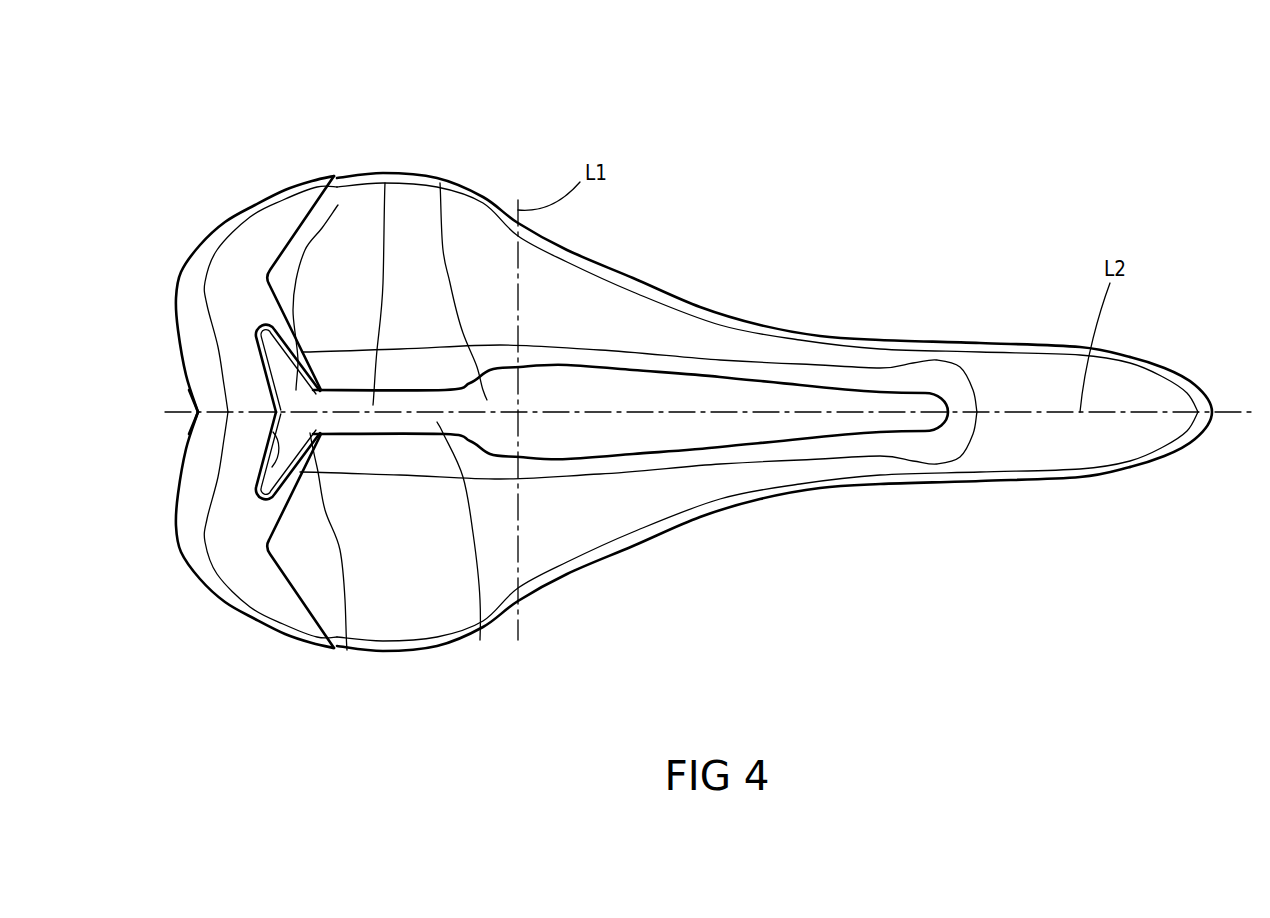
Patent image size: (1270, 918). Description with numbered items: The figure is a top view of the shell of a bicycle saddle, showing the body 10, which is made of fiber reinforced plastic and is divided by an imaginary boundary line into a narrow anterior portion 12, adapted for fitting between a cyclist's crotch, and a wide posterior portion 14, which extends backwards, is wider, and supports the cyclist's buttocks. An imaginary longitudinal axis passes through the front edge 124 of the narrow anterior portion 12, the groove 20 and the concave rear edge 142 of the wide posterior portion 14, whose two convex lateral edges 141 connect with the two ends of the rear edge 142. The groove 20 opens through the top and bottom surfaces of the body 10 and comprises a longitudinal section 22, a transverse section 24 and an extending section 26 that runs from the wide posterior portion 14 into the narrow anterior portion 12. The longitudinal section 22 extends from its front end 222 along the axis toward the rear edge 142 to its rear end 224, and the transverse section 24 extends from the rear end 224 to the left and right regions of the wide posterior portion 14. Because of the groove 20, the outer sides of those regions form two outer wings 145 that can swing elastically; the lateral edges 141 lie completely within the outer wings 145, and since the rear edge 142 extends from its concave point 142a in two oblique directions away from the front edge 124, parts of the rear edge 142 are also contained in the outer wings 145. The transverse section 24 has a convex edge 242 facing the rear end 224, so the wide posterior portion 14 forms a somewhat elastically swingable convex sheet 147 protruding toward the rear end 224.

The body 10 is at (1049, 172).
The narrow anterior portion 12 is at (905, 320).
The wide posterior portion 14 is at (240, 198).
The lateral edge 141 is at (288, 187).
The rear edge 142 is at (190, 375).
The concave point 142a is at (197, 414).
The outer wing 145 is at (475, 232).
The convex sheet 147 is at (268, 402).
The convex edge 242 is at (258, 469).
The groove 20 is at (330, 110).
The longitudinal section 22 is at (385, 183).
The transverse section 24 is at (338, 205).
The extending section 26 is at (440, 183).
The front end 222 is at (480, 640).
The rear end 224 is at (347, 650).
The front edge 124 is at (1200, 381).